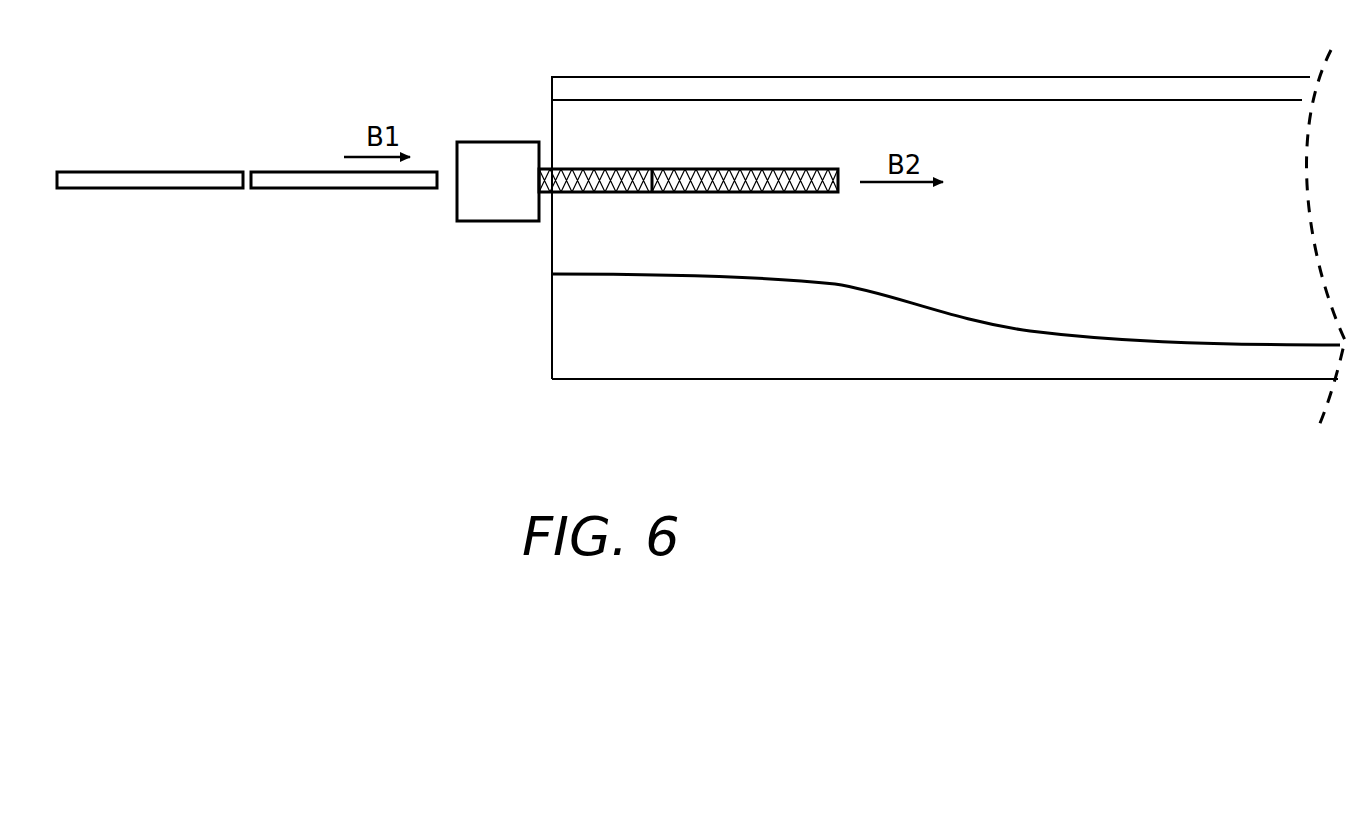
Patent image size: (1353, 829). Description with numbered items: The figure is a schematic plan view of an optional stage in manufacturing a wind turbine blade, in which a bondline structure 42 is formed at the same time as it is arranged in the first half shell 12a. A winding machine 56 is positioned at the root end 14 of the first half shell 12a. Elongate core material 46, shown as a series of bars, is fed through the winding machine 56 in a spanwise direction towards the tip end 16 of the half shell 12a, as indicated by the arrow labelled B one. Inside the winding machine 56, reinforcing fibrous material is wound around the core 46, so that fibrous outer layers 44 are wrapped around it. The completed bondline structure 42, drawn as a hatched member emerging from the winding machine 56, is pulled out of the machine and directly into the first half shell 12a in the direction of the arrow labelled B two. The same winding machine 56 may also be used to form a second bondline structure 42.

The root end 14 is at (568, 138).
The first half shell 12a is at (1032, 313).
The elongate core material 46 is at (332, 180).
The winding machine 56 is at (483, 207).
The bondline structure 42 is at (754, 161).
The fibrous outer layers 44 is at (605, 183).
The tip end 16 is at (1275, 183).